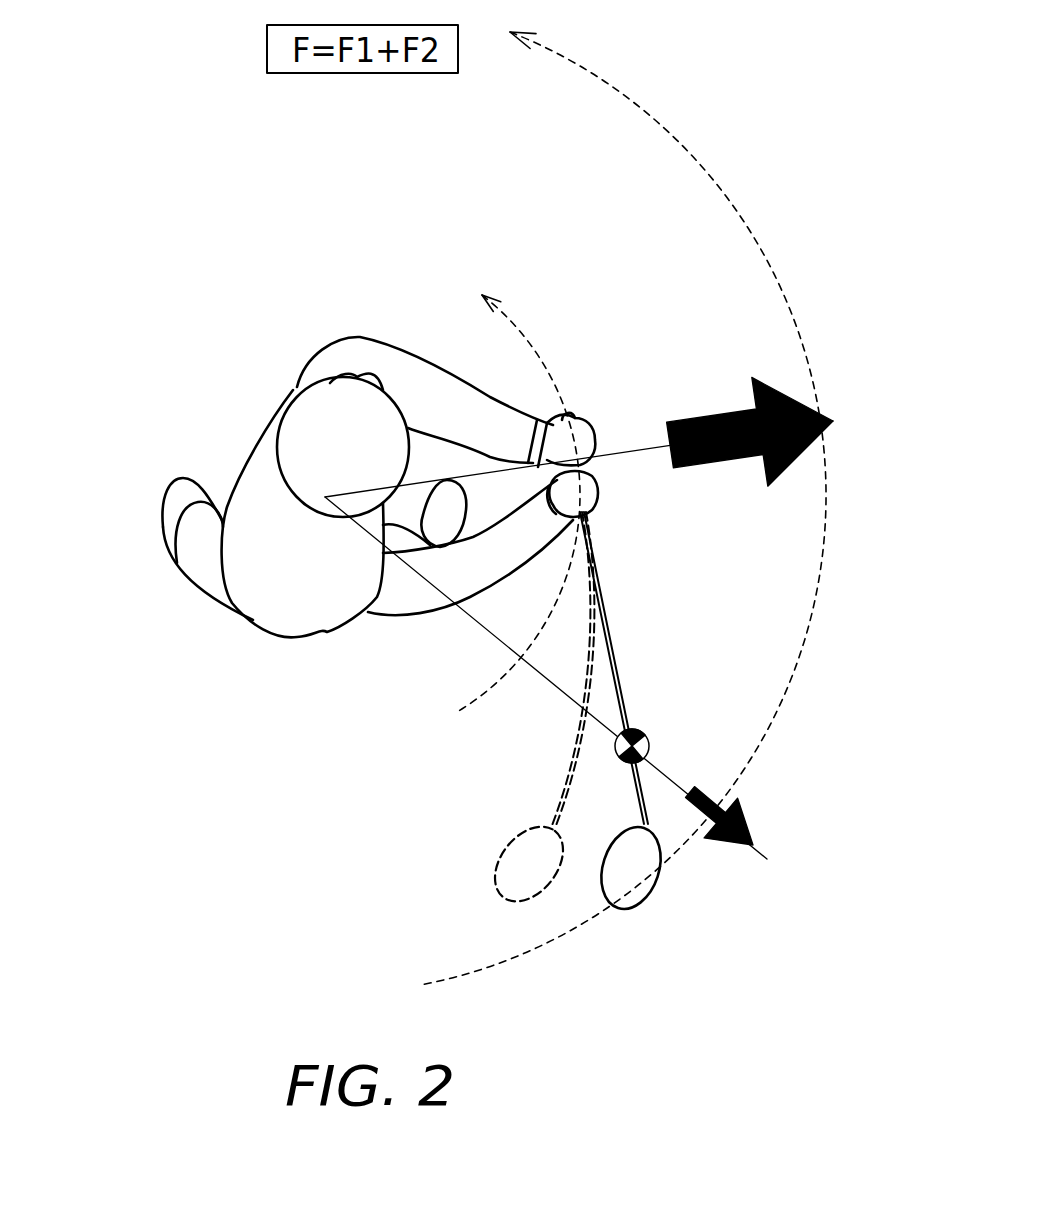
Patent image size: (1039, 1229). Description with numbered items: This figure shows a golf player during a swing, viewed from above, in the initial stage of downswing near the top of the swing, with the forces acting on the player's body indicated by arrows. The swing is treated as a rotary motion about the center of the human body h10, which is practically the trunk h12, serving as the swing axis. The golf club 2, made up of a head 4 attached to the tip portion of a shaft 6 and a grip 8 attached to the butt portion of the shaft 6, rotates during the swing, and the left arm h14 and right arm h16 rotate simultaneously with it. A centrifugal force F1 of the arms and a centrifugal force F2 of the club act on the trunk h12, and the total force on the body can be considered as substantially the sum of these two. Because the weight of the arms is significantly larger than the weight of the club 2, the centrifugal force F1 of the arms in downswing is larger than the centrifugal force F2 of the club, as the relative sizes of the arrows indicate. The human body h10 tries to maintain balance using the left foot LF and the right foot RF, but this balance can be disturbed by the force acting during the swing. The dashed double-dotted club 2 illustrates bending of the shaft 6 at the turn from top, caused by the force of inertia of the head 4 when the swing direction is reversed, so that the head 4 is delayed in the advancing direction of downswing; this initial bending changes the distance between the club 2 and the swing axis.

The human body h10 is at (235, 245).
The trunk h12 is at (267, 453).
The left arm h14 is at (402, 380).
The right arm h16 is at (433, 597).
The left foot LF is at (170, 517).
The right foot RF is at (452, 508).
The grip 8 is at (577, 420).
The shaft 6 is at (613, 650).
The head 4 is at (642, 890).
The golf club 2 is at (510, 908).
The centrifugal force of the arms F1 is at (833, 421).
The centrifugal force of the club F2 is at (570, 692).